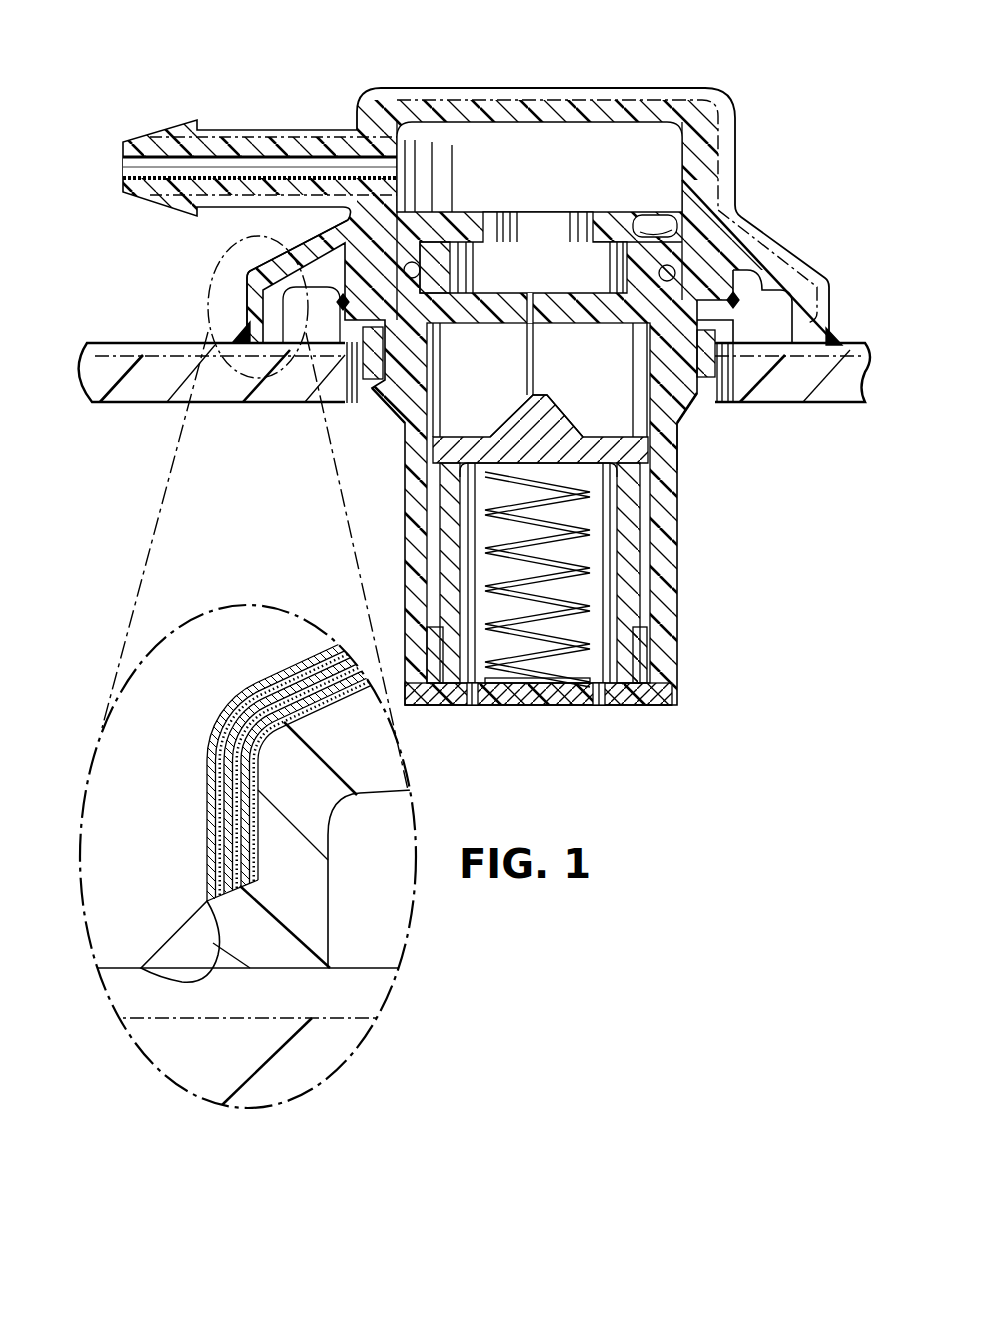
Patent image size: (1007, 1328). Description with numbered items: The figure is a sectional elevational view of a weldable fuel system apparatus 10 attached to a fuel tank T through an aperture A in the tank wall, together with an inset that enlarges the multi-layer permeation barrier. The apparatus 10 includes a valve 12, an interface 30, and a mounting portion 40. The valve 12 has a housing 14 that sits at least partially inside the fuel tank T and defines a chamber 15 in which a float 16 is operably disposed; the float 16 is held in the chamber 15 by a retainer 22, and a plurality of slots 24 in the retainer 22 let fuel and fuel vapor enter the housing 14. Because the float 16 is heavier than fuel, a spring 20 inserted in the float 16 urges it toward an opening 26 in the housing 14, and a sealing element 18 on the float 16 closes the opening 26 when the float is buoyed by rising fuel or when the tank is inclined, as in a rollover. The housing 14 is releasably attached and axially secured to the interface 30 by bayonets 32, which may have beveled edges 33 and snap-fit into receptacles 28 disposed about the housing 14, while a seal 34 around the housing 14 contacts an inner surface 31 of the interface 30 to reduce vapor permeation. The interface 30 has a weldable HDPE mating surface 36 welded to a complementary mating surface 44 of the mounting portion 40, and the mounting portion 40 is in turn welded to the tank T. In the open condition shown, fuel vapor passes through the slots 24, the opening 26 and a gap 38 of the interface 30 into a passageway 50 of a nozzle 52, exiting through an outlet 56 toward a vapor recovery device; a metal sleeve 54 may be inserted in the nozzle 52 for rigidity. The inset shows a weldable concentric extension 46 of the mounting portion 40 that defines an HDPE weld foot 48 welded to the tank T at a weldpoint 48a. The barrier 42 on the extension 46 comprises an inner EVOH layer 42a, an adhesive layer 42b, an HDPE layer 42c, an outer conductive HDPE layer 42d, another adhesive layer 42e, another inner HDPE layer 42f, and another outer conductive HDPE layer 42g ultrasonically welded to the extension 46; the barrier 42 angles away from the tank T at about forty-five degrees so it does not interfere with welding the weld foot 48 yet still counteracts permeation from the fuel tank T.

The weldable fuel system apparatus 10 is at (545, 58).
The valve 12 is at (695, 592).
The housing 14 is at (672, 645).
The chamber 15 is at (487, 412).
The float 16 is at (580, 416).
The sealing element 18 is at (540, 395).
The spring 20 is at (598, 577).
The retainer 22 is at (672, 700).
The slots 24 is at (600, 706).
The opening 26 is at (536, 312).
The receptacles 28 is at (740, 405).
The interface 30 is at (710, 432).
The inner surface 31 is at (645, 222).
The bayonets 32 is at (688, 425).
The beveled edges 33 is at (380, 400).
The seal 34 is at (625, 275).
The mating surface 36 is at (345, 230).
The gap 38 is at (525, 245).
The mounting portion 40 is at (668, 70).
The barrier 42 is at (736, 172).
The layer of EVOH 42a is at (262, 688).
The adhesive layer 42b is at (222, 725).
The layer of HDPE 42c is at (214, 752).
The outer layer of conductive HDPE 42d is at (208, 792).
The adhesive layer 42e is at (292, 668).
The inner layer of HDPE 42f is at (292, 722).
The outer layer of conductive HDPE 42g is at (318, 684).
The mating surface 44 is at (362, 320).
The extension 46 is at (842, 272).
The weld foot 48 is at (790, 312).
The weldpoint 48a is at (825, 335).
The passageway 50 is at (525, 180).
The nozzle 52 is at (198, 118).
The sleeve 54 is at (123, 157).
The outlet 56 is at (123, 180).
The aperture A is at (731, 345).
The fuel tank T is at (845, 398).